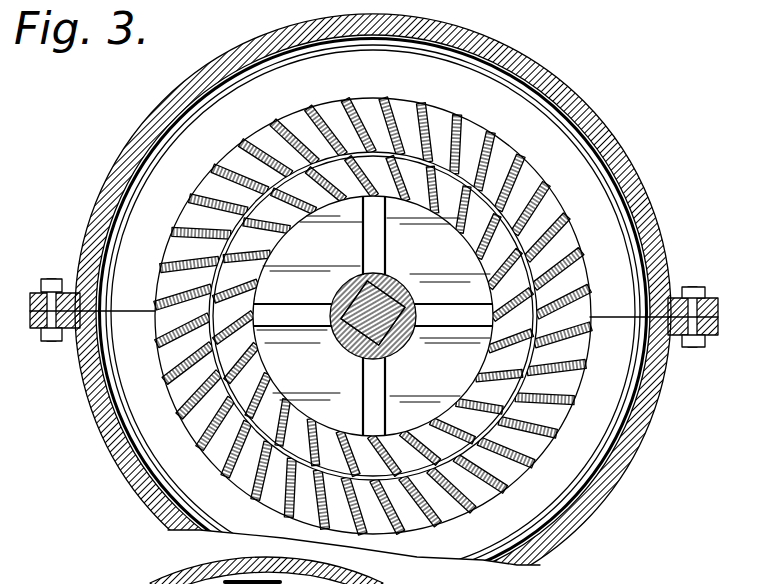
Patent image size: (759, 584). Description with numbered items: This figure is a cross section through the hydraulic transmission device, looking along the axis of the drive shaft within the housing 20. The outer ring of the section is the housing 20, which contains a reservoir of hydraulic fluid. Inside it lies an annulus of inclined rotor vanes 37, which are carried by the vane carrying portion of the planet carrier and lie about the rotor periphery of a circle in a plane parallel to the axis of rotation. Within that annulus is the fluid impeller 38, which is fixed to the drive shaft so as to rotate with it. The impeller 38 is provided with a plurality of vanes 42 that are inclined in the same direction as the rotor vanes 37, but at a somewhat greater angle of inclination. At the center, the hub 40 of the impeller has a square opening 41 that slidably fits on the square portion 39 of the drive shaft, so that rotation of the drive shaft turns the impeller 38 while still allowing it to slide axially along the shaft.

The housing 20 is at (122, 150).
The rotor vanes 37 is at (467, 128).
The fluid impeller 38 is at (287, 213).
The square portion 39 is at (338, 298).
The hub 40 is at (402, 281).
The square opening 41 is at (404, 346).
The vanes 42 is at (288, 420).